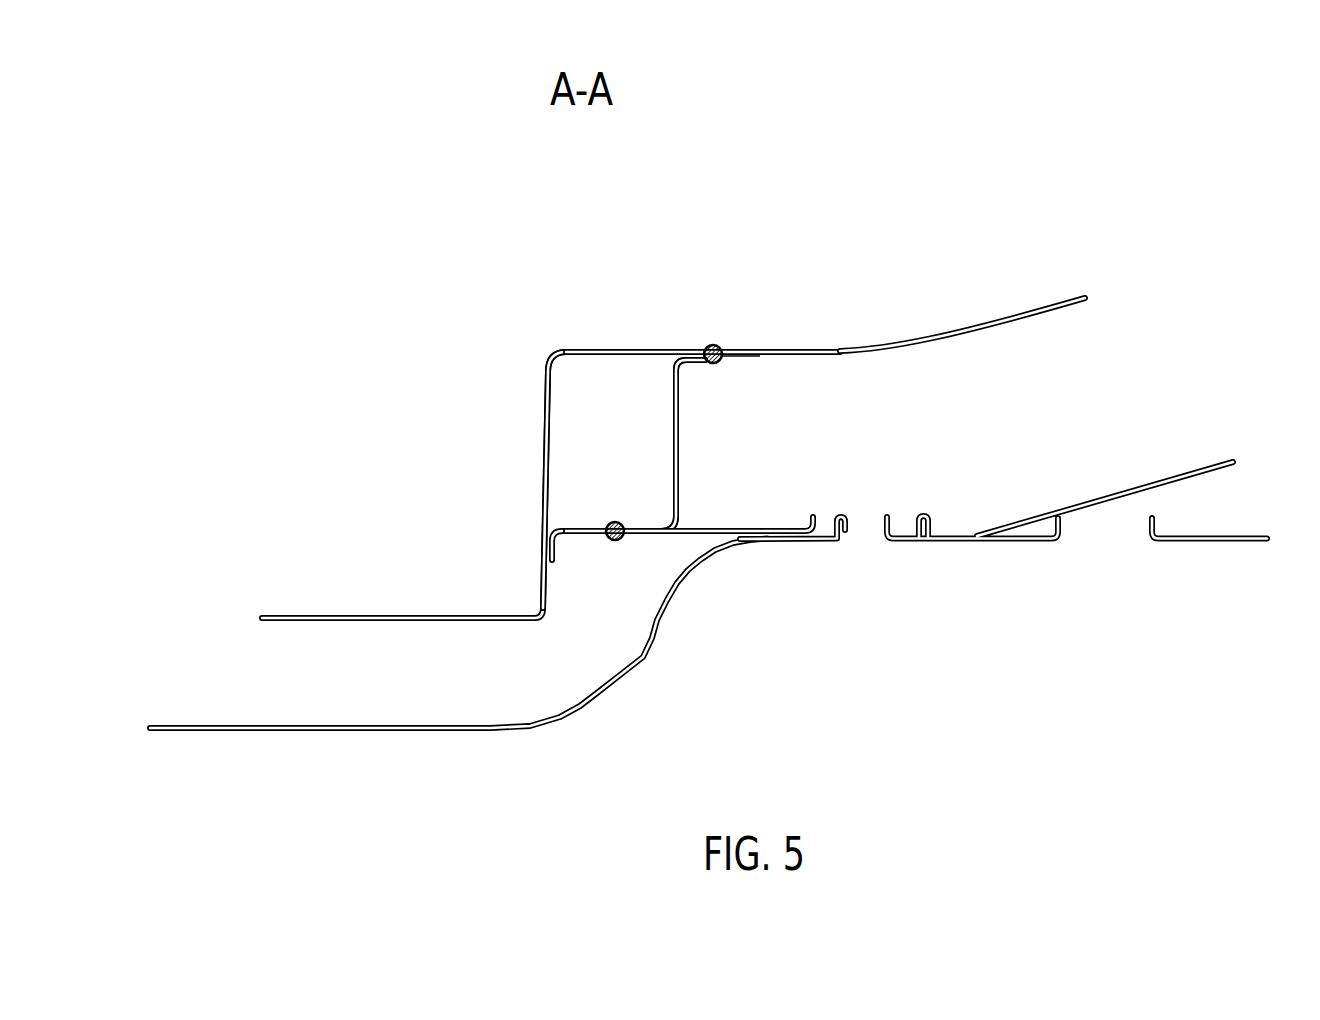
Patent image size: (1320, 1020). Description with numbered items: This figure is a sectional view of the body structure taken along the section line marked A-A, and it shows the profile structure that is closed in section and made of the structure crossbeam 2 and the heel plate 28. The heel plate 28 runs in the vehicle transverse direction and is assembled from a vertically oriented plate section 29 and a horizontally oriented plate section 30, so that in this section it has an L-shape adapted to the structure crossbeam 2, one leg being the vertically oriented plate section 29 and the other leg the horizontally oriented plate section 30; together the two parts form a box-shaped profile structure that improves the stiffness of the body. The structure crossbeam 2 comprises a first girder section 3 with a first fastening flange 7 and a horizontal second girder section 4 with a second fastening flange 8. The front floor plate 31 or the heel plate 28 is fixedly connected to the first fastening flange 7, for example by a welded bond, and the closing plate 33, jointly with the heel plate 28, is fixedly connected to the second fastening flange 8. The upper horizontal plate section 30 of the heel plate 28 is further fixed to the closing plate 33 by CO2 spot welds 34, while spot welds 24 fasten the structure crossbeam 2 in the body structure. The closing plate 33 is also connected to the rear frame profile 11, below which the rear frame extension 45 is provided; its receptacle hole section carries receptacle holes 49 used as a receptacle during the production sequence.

The structure crossbeam 2 is at (678, 442).
The first girder section 3 is at (646, 527).
The second girder section 4 is at (706, 445).
The first fastening flange 7 is at (555, 543).
The second fastening flange 8 is at (720, 360).
The rear frame profile 11 is at (750, 530).
The spot weld 24 is at (616, 522).
The heel plate 28 is at (545, 448).
The vertically oriented plate section 29 is at (495, 480).
The horizontally oriented plate section 30 is at (598, 345).
The front floor plate 31 is at (336, 612).
The closing plate 33 is at (979, 330).
The CO2 spot weld 34 is at (716, 345).
The rear frame extension 45 is at (607, 692).
The receptacle hole 49 is at (1057, 554).